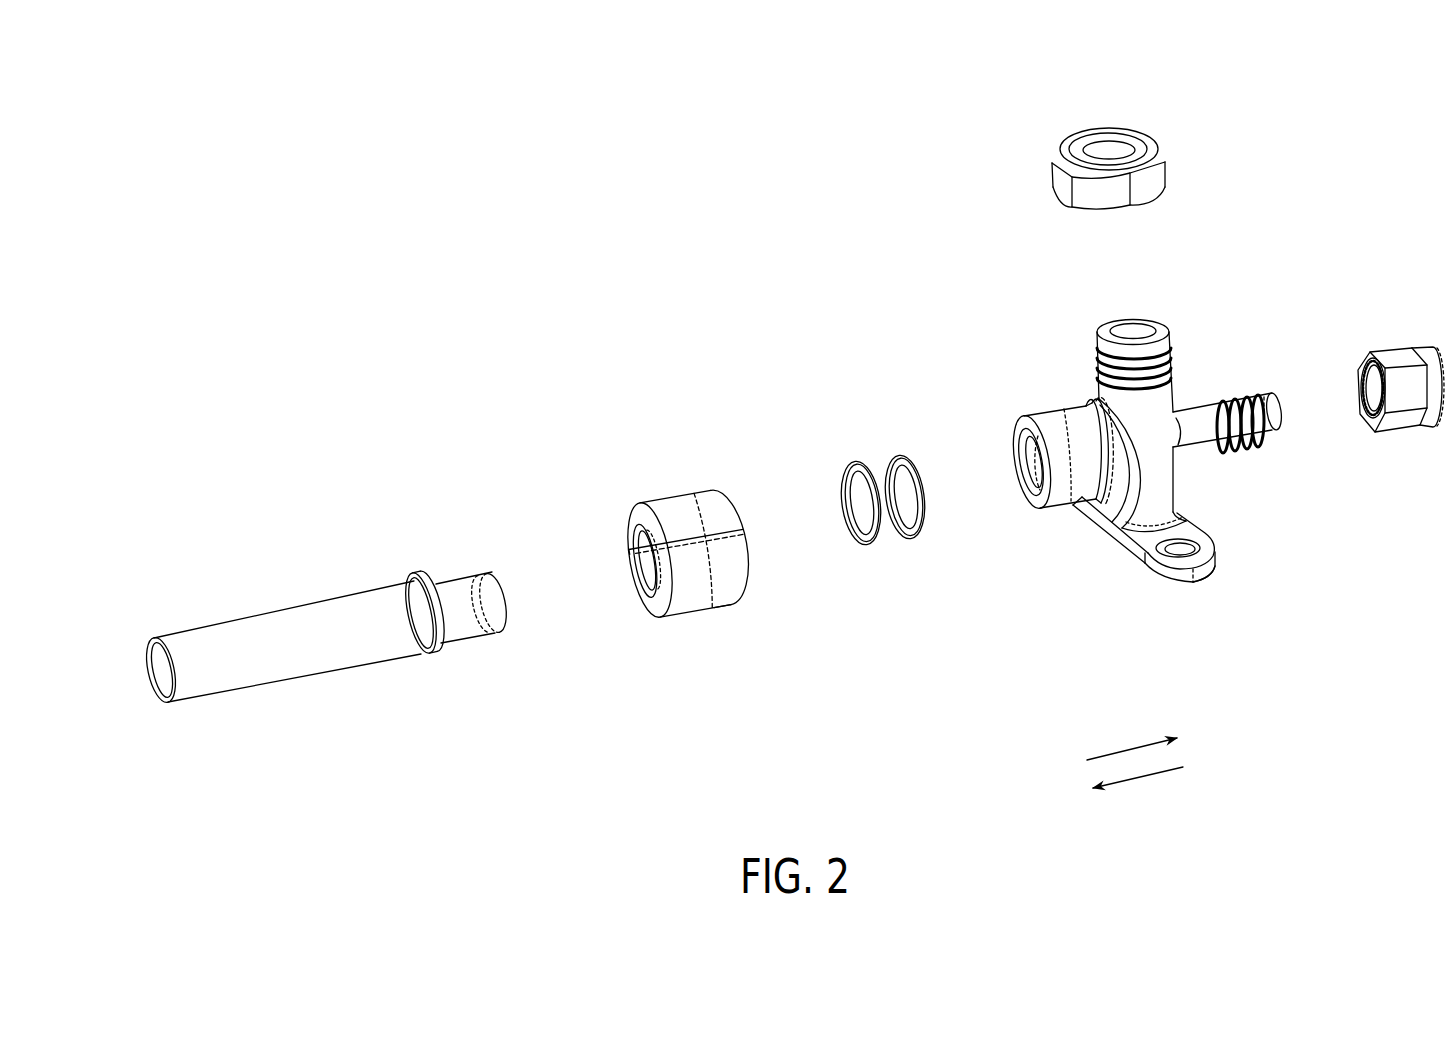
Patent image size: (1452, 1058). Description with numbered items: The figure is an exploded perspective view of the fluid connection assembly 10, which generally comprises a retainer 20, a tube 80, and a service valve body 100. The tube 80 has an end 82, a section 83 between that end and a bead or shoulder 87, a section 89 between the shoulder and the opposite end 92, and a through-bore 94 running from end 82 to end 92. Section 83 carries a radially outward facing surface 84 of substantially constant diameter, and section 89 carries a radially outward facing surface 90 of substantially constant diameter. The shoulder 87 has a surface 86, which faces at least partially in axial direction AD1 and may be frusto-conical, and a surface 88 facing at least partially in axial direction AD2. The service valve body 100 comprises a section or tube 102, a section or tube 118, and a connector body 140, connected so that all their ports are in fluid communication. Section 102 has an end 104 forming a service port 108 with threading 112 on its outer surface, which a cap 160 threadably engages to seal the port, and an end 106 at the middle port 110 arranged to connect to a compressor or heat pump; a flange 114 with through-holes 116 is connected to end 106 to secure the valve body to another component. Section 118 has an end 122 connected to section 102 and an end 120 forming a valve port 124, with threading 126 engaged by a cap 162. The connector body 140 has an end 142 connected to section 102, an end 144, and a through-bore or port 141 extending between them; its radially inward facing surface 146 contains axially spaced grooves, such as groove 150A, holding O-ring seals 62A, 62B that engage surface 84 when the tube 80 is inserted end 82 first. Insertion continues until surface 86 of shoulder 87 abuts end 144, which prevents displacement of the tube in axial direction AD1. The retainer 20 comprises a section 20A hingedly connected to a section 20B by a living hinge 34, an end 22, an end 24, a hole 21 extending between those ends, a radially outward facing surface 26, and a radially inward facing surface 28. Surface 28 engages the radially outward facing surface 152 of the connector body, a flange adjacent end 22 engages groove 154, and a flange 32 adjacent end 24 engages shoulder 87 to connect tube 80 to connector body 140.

The fluid connection assembly 10 is at (491, 130).
The retainer 20 is at (710, 674).
The section 20A is at (732, 585).
The section 20B is at (702, 500).
The hole 21 is at (634, 547).
The end 22 is at (740, 498).
The end 24 is at (630, 530).
The radially outward facing surface 26 is at (660, 505).
The radially inward facing surface 28 is at (648, 590).
The flange 32 is at (632, 583).
The hinge 34 is at (752, 526).
The seal 62A is at (875, 572).
The seal 62B is at (918, 555).
The tube 80 is at (283, 398).
The end 82 is at (507, 595).
The section 83 is at (492, 664).
The radially outward facing surface 84 is at (472, 583).
The surface 86 is at (437, 592).
The bead or shoulder 87 is at (432, 660).
The surface 88 is at (413, 580).
The section 89 is at (312, 714).
The radially outward facing surface 90 is at (232, 637).
The end 92 is at (165, 702).
The through-bore 94 is at (155, 661).
The service valve body 100 is at (1247, 279).
The section or tube 102 is at (1175, 480).
The end 104 is at (1160, 327).
The end 106 is at (1190, 513).
The port 108 is at (1133, 322).
The port 110 is at (1128, 572).
The threading 112 is at (1178, 368).
The flange 114 is at (1205, 580).
The through-hole 116 is at (1203, 545).
The section or tube 118 is at (1216, 420).
The end 120 is at (1273, 408).
The end 122 is at (1180, 437).
The port 124 is at (1292, 404).
The threading 126 is at (1262, 430).
The connector body 140 is at (1053, 413).
The through-bore or port 141 is at (1026, 446).
The end 142 is at (1135, 478).
The end 144 is at (1023, 422).
The radially inward facing surface 146 is at (1023, 460).
The groove 150A is at (1042, 500).
The radially outward facing surface 152 is at (1067, 430).
The groove 154 is at (1105, 494).
The cap 160 is at (1125, 132).
The cap 162 is at (1418, 378).
The axial direction AD1 is at (1133, 748).
The axial direction AD2 is at (1138, 777).